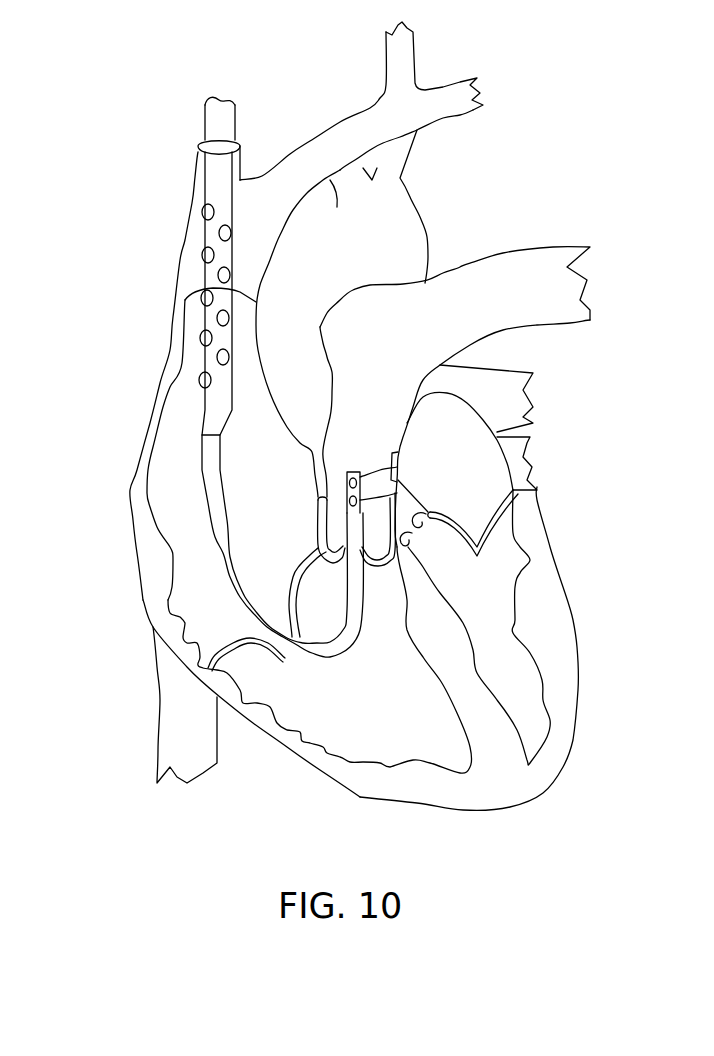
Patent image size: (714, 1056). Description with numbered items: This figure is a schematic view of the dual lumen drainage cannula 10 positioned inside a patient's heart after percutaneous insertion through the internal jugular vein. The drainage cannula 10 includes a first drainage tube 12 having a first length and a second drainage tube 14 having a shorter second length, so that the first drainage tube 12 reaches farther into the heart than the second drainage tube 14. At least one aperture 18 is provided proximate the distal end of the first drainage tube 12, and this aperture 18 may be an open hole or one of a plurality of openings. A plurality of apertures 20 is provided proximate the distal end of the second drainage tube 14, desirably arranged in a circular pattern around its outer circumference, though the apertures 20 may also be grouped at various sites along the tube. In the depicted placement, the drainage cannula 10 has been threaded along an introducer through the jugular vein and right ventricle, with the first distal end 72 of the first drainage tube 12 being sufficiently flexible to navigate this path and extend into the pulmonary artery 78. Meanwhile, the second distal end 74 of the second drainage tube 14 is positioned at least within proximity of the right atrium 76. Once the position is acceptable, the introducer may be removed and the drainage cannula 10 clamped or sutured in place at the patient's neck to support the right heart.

The dual lumen drainage cannula 10 is at (148, 99).
The first drainage tube 12 is at (222, 550).
The second drainage tube 14 is at (208, 356).
The aperture 18 is at (400, 508).
The apertures 20 is at (203, 211).
The first distal end 72 is at (395, 473).
The second distal end 74 is at (198, 402).
The right atrium 76 is at (173, 505).
The pulmonary artery 78 is at (488, 270).